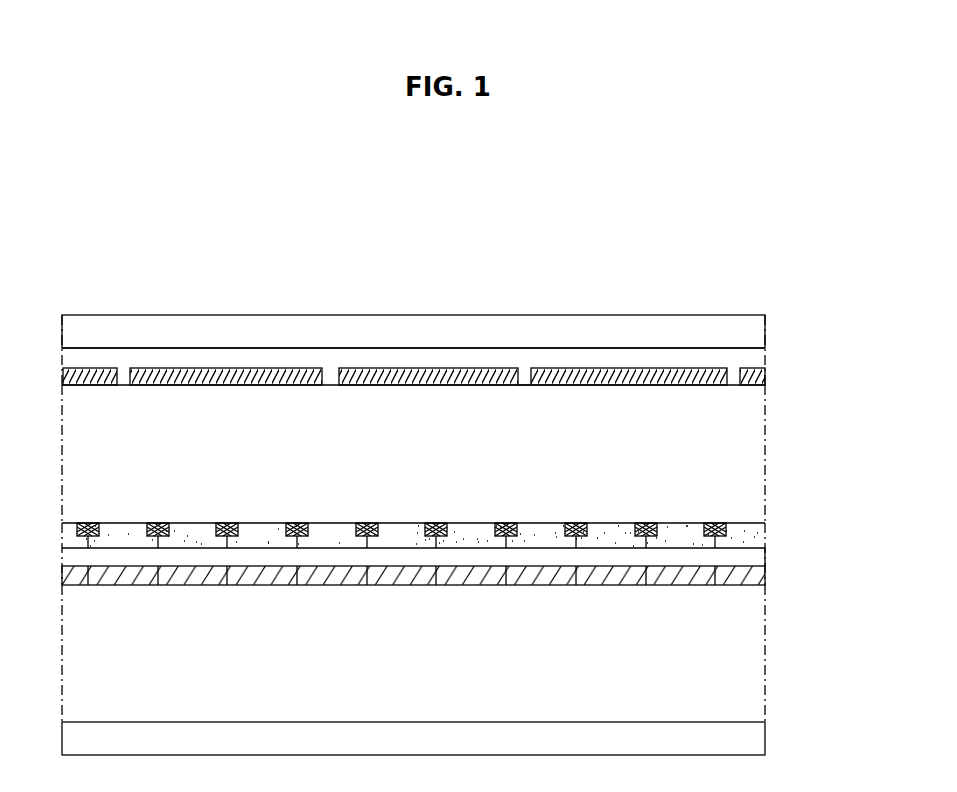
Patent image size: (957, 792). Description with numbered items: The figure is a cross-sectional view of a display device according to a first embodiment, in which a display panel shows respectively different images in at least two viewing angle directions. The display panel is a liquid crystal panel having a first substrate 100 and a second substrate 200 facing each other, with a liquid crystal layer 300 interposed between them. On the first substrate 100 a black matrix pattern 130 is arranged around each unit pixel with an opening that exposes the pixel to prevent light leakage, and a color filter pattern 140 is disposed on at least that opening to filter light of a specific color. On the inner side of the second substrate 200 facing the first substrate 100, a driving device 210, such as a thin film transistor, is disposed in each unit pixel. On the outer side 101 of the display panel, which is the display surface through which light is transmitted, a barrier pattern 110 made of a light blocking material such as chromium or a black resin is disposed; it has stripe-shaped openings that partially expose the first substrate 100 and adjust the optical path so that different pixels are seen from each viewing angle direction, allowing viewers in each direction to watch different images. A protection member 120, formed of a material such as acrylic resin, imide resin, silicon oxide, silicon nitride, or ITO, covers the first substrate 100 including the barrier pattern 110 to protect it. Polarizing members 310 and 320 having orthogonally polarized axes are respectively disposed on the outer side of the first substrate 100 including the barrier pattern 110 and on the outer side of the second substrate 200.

The first substrate 100 is at (758, 450).
The outer side of the display panel 101 is at (523, 386).
The barrier pattern 110 is at (766, 382).
The protection member 120 is at (760, 363).
The black matrix pattern 130 is at (648, 524).
The color filter pattern 140 is at (758, 544).
The second substrate 200 is at (758, 674).
The driving device 210 is at (760, 588).
The liquid crystal layer 300 is at (765, 559).
The polarizing member 310 is at (762, 336).
The polarizing member 320 is at (758, 749).